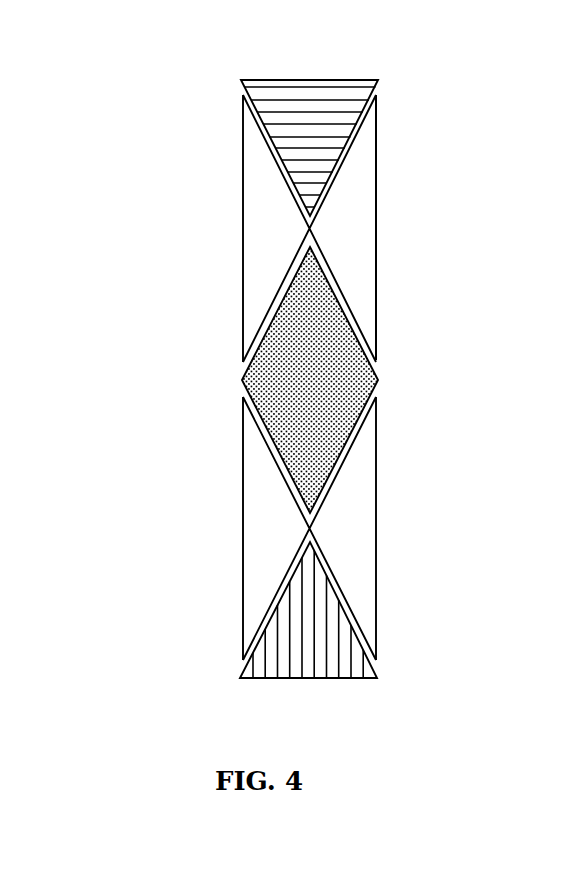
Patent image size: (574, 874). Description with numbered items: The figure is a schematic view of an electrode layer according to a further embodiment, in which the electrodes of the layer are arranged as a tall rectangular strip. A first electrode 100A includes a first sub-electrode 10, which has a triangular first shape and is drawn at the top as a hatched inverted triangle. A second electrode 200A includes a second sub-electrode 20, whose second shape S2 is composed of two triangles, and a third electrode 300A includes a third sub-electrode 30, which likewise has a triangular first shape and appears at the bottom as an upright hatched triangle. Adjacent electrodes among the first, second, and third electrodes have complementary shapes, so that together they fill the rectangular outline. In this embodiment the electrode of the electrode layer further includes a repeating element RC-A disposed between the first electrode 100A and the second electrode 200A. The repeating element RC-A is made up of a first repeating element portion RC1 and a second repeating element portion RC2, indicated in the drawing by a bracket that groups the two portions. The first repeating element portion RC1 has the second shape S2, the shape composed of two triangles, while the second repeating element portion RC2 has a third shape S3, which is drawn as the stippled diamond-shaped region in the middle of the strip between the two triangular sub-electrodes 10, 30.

The first sub-electrode 10 is at (332, 87).
The second sub-electrode 20 is at (363, 517).
The third sub-electrode 30 is at (355, 668).
The first electrode 100A is at (313, 71).
The second electrode 200A is at (241, 550).
The third electrode 300A is at (313, 679).
The second shape S2 is at (365, 225).
The third shape S3 is at (364, 379).
The first repeating element portion RC1 is at (242, 225).
The second repeating element portion RC2 is at (241, 382).
The repeating element RC-A is at (160, 223).